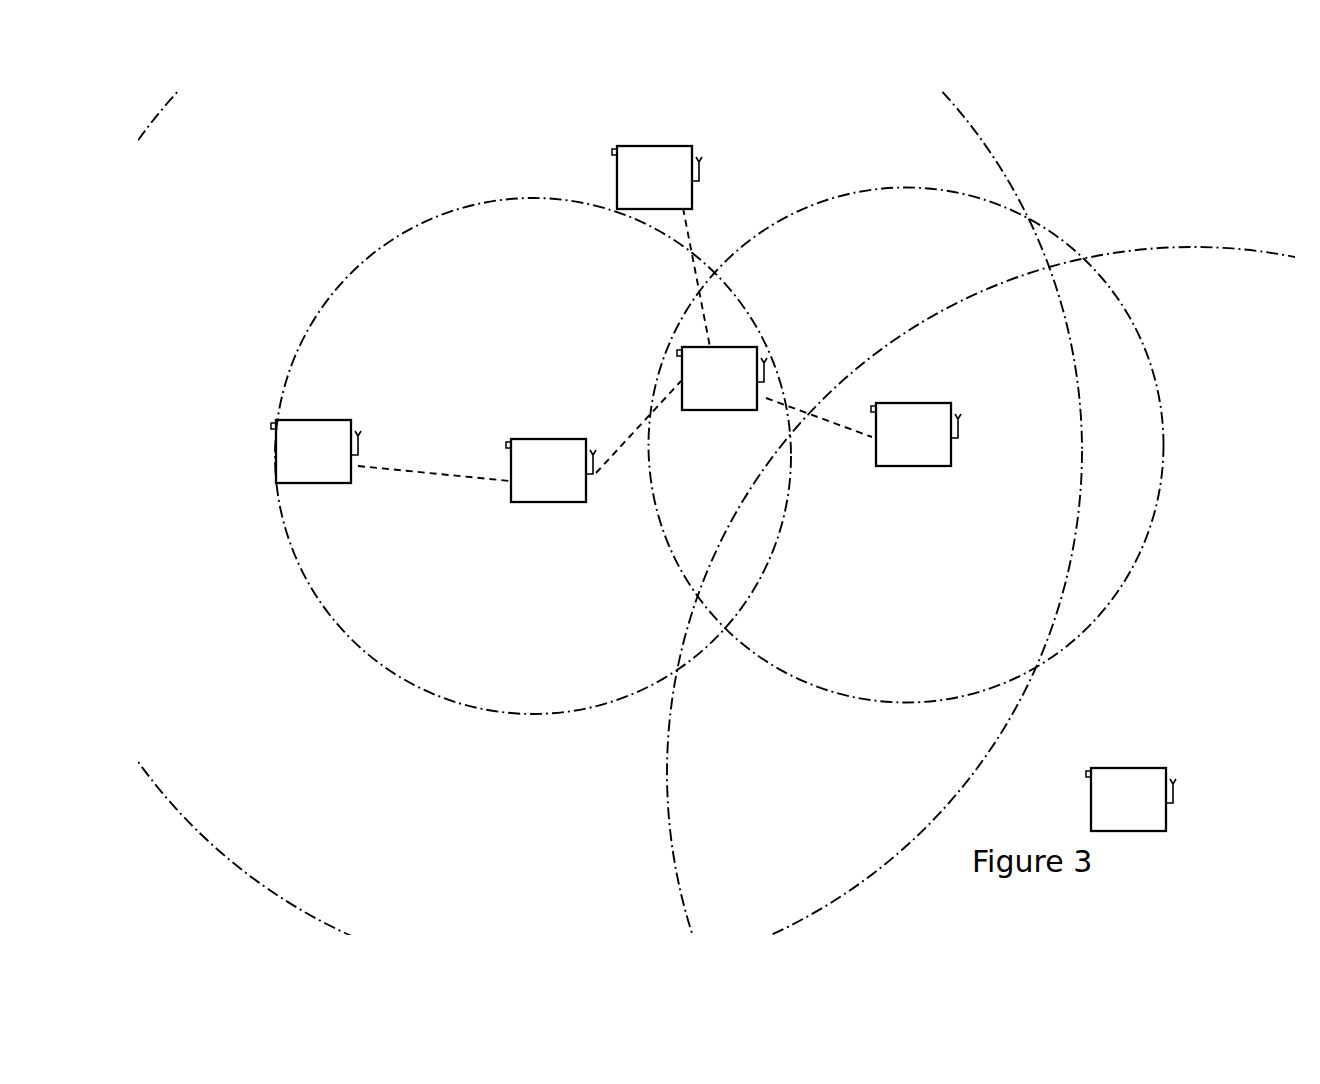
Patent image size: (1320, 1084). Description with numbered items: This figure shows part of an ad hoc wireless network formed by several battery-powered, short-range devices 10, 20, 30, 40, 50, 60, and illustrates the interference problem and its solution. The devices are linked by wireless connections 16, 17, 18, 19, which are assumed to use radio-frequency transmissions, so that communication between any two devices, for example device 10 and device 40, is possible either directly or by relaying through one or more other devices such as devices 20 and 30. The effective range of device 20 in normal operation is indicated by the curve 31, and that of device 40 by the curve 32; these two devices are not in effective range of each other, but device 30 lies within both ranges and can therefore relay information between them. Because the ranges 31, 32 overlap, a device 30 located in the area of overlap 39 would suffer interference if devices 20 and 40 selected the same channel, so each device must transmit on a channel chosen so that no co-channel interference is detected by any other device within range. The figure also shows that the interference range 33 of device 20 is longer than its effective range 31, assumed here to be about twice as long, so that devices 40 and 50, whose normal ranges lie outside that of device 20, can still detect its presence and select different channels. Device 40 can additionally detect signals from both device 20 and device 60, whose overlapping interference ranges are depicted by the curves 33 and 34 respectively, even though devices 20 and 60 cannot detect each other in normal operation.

The device 10 is at (316, 451).
The device 20 is at (551, 470).
The device 30 is at (722, 378).
The device 40 is at (916, 434).
The device 50 is at (657, 177).
The device 60 is at (1131, 799).
The wireless connection 16 is at (674, 277).
The wireless connection 17 is at (434, 481).
The wireless connection 18 is at (635, 427).
The wireless connection 19 is at (819, 430).
The effective range 31 is at (533, 456).
The effective range 32 is at (906, 445).
The interference range 33 is at (559, 491).
The interference range 34 is at (993, 665).
The area of overlap 39 is at (705, 512).